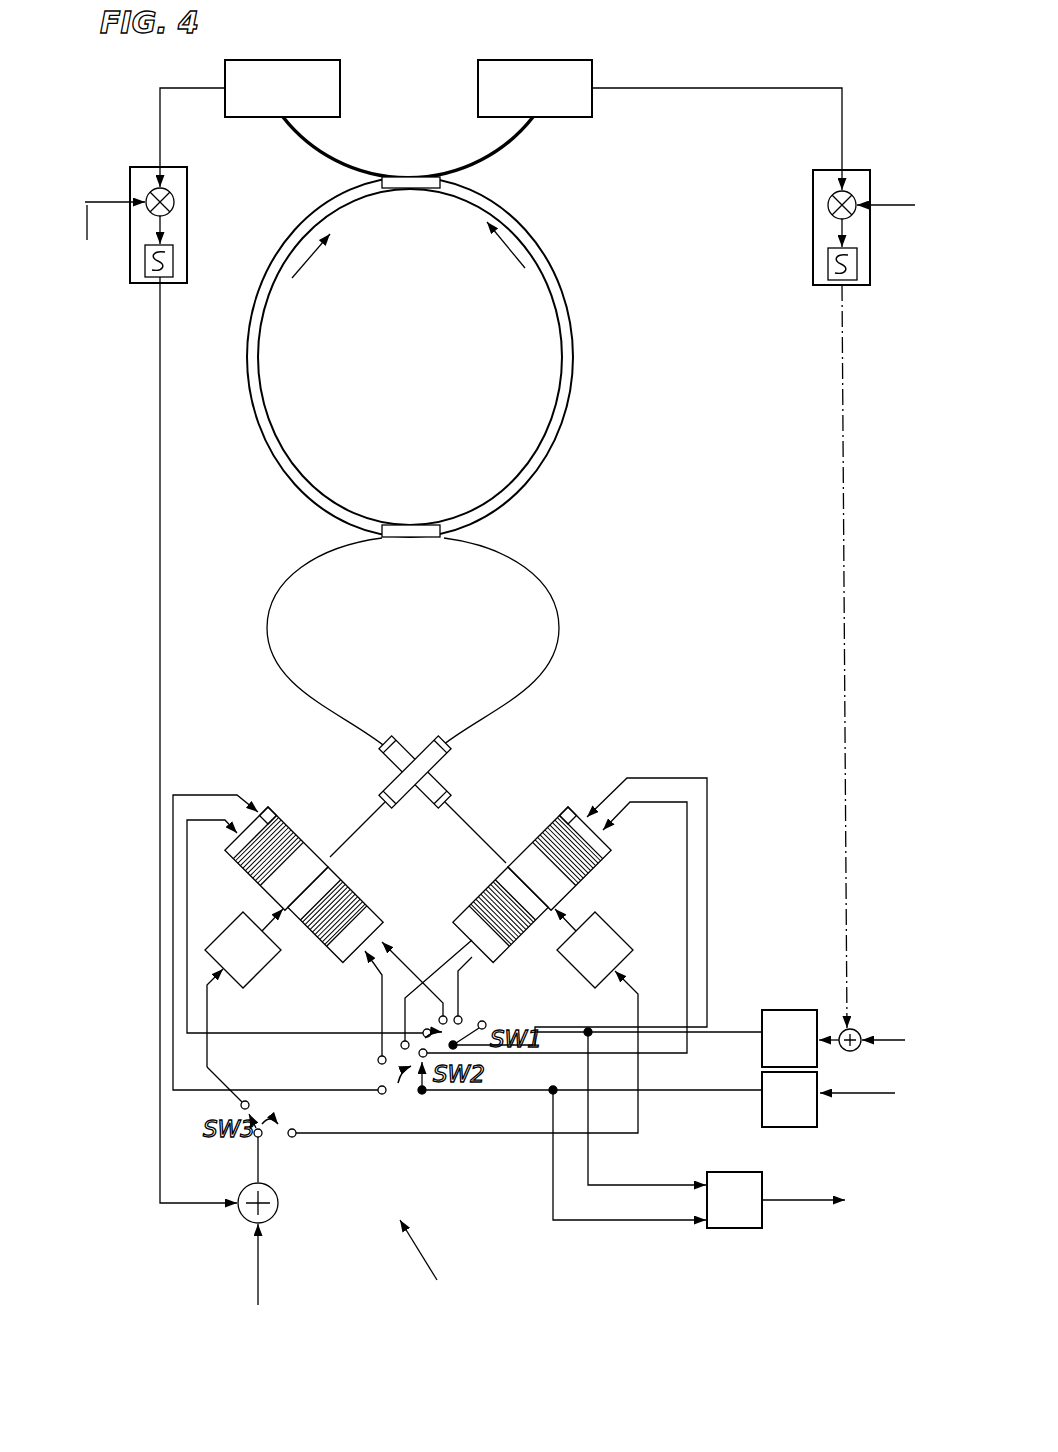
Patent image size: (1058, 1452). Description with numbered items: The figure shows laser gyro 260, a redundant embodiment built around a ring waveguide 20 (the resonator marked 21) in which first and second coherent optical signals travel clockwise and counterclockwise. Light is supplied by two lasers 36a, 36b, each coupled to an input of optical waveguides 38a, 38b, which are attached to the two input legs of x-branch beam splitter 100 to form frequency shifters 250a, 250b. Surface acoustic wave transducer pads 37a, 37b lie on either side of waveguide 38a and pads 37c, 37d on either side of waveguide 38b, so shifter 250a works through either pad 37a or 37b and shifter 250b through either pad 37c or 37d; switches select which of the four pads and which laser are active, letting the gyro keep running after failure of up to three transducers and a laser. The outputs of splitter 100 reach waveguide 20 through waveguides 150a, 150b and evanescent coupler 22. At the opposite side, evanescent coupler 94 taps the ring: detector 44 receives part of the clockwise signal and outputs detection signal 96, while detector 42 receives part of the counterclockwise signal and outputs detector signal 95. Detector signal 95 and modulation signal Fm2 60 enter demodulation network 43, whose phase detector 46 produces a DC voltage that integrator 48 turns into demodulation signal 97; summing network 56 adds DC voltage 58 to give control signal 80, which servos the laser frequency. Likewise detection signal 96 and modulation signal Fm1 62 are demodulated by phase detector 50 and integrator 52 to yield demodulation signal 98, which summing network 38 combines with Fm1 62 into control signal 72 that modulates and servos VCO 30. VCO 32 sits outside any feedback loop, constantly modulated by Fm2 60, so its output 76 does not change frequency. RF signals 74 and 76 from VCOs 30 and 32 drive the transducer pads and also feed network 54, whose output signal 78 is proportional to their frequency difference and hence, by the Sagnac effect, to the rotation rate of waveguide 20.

The waveguide 20 is at (505, 490).
The resonator assembly 21 is at (417, 381).
The evanescent coupler 22 is at (410, 538).
The VCO 30 is at (783, 1008).
The VCO 32 is at (788, 1128).
The laser 36a is at (260, 970).
The laser 36b is at (609, 923).
The SAW transducer pad 37a is at (285, 812).
The SAW transducer pad 37b is at (355, 902).
The SAW transducer pad 37c is at (490, 882).
The SAW transducer pad 37d is at (593, 860).
The summing network 38 is at (840, 1028).
The optical waveguide 38a is at (327, 870).
The optical waveguide 38b is at (510, 866).
The detector 42 is at (302, 58).
The demodulation network 43 is at (193, 222).
The detector 44 is at (550, 60).
The phase detector 46 is at (172, 197).
The integrator 48 is at (173, 257).
The phase detector 50 is at (827, 207).
The integrator 52 is at (828, 263).
The network 54 is at (737, 1170).
The summing network 56 is at (279, 1202).
The DC voltage 58 is at (260, 1275).
The modulation signal Fm2 60 is at (860, 1132).
The modulation signal Fm1 62 is at (878, 208).
The control signal 72 is at (838, 1036).
The RF signal 74 is at (610, 1032).
The RF signal 76 is at (495, 1088).
The output signal 78 is at (783, 1203).
The control signal 80 is at (260, 1167).
The evanescent coupler 94 is at (400, 185).
The detector signal 95 is at (180, 86).
The detection signal 96 is at (653, 88).
The demodulation signal 97 is at (165, 510).
The demodulation signal 98 is at (843, 472).
The x-branch beam splitter 100 is at (432, 743).
The waveguide 150a is at (557, 637).
The waveguide 150b is at (267, 637).
The frequency shifter 250a is at (298, 833).
The frequency shifter 250b is at (560, 813).
The laser gyro 260 is at (441, 1254).